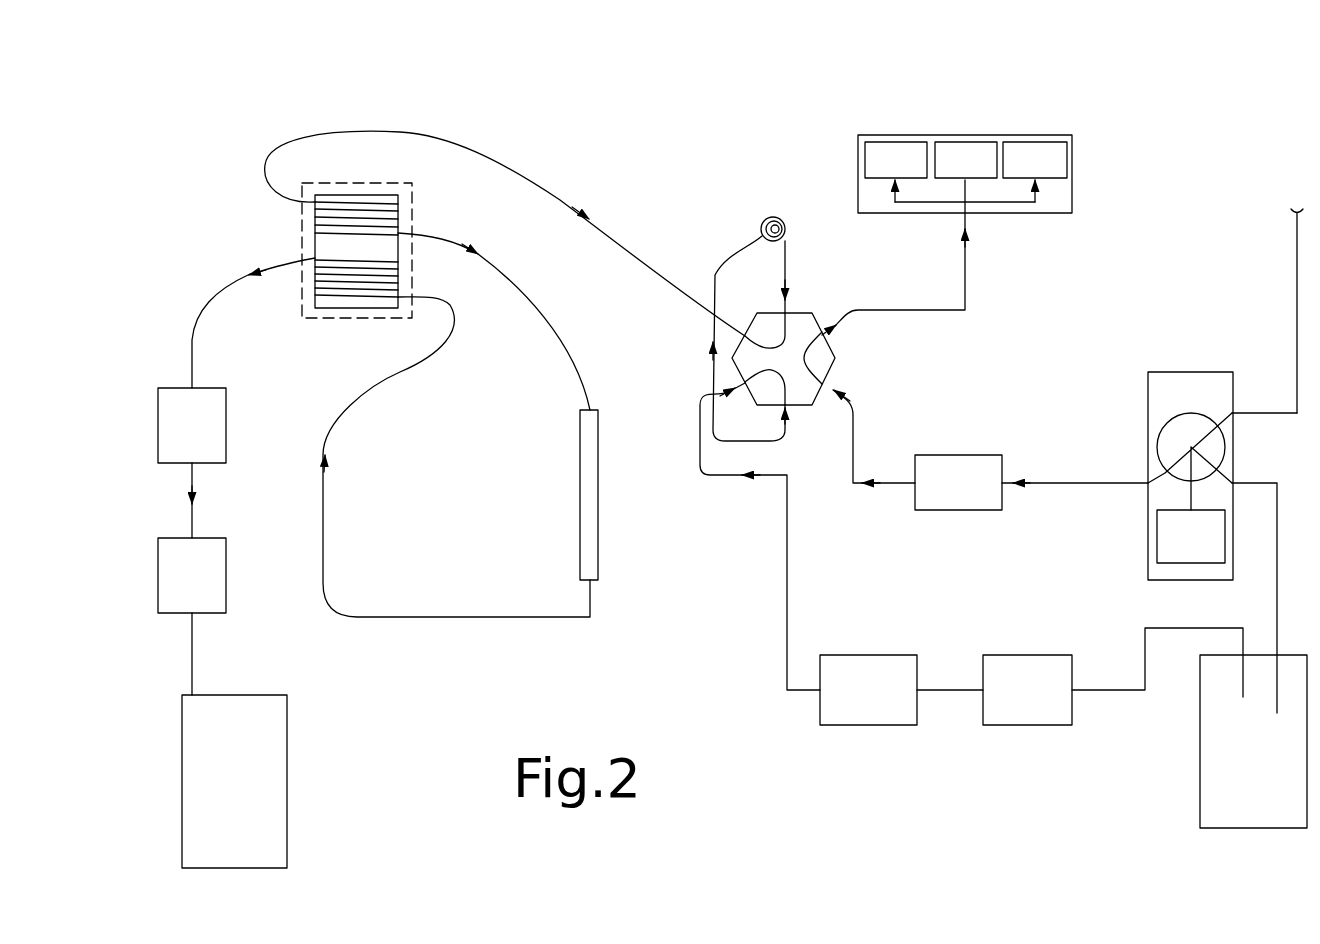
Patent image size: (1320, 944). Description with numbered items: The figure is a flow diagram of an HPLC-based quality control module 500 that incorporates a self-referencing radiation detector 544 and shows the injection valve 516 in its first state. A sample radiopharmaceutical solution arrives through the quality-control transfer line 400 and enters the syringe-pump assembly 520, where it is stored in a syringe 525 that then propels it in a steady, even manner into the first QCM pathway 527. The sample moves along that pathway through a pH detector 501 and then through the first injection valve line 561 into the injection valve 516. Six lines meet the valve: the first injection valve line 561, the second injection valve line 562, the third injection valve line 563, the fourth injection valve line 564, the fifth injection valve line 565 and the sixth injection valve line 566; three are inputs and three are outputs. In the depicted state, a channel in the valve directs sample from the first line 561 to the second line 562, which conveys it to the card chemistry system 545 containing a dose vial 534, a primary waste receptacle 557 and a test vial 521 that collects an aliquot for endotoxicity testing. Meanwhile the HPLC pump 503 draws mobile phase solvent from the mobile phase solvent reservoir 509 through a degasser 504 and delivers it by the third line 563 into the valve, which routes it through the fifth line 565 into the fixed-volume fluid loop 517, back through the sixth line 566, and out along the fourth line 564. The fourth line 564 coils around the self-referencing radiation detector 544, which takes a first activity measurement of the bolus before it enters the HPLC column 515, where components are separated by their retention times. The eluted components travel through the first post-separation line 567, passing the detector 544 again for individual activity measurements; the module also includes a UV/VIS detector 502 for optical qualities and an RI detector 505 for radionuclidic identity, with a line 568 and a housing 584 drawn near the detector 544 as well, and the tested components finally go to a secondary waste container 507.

The fluid system 500 is at (1238, 131).
The quality-control transfer line 400 is at (1297, 248).
The pH detector 501 is at (950, 455).
The UV/VIS detector 502 is at (226, 423).
The HPLC pump 503 is at (850, 725).
The degasser 504 is at (1017, 725).
The RI detector 505 is at (226, 573).
The secondary waste container 507 is at (287, 762).
The mobile phase solvent reservoir 509 is at (1200, 778).
The HPLC column 515 is at (598, 550).
The injection valve 516 is at (830, 347).
The fixed-volume fluid loop 517 is at (762, 221).
The syringe-pump assembly 520 is at (1135, 448).
The test vial 521 is at (965, 142).
The syringe 525 is at (1157, 545).
The first QCM pathway 527 is at (1060, 483).
The dose vial 534 is at (888, 142).
The self-referencing radiation detector 544 is at (315, 243).
The card chemistry system 545 is at (1022, 141).
The primary waste receptacle 557 is at (1035, 142).
The first injection valve line 561 is at (850, 403).
The second injection valve line 562 is at (968, 310).
The third injection valve line 563 is at (703, 475).
The fourth injection valve line 564 is at (487, 158).
The fifth injection valve line 565 is at (780, 438).
The sixth injection valve line 566 is at (785, 268).
The first post-separation line 567 is at (323, 497).
The outlet line 568 is at (192, 342).
The housing 584 is at (302, 208).